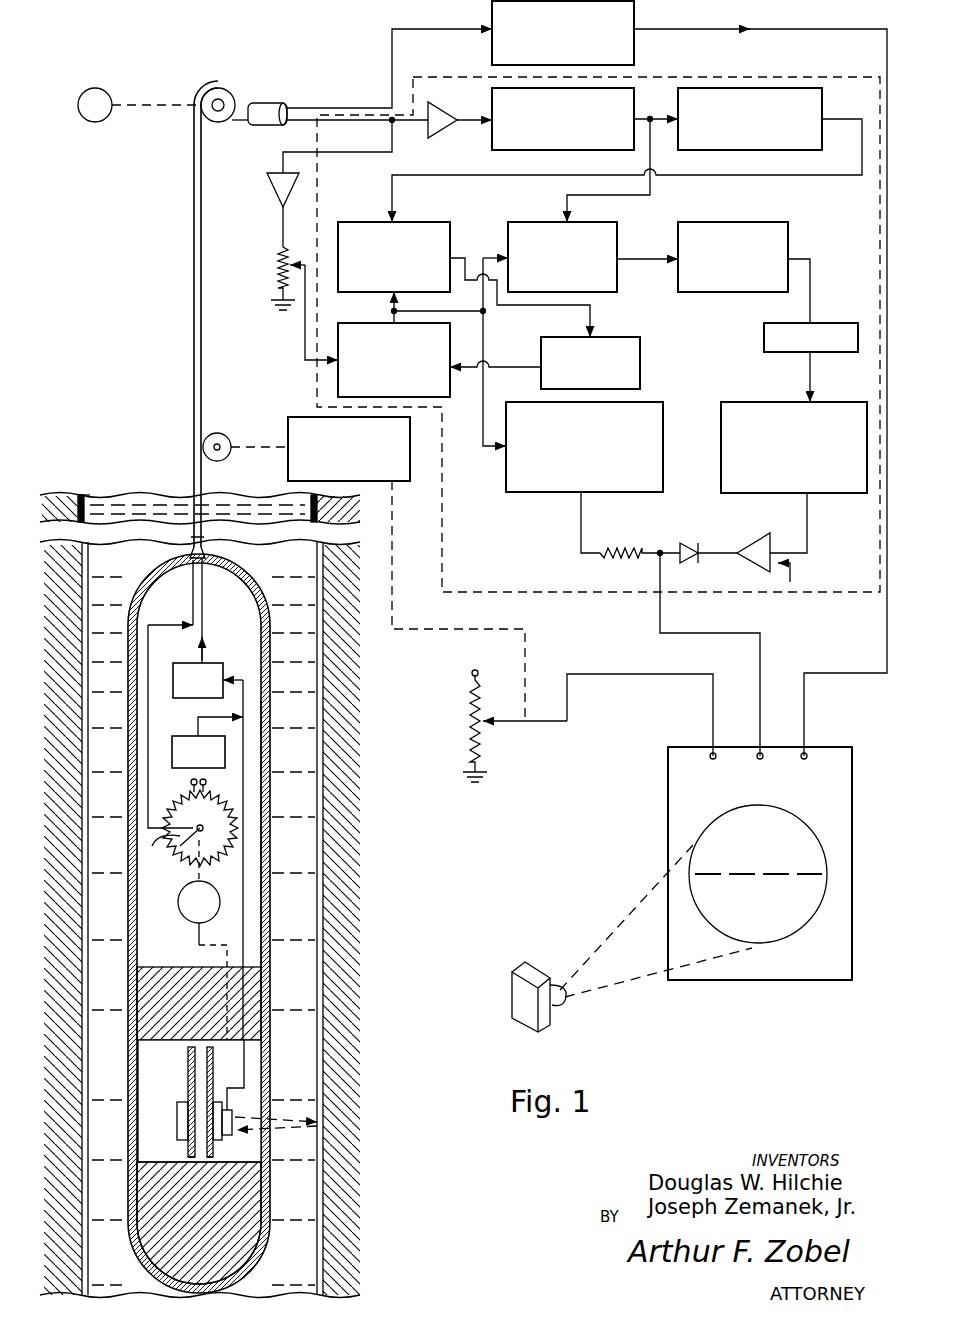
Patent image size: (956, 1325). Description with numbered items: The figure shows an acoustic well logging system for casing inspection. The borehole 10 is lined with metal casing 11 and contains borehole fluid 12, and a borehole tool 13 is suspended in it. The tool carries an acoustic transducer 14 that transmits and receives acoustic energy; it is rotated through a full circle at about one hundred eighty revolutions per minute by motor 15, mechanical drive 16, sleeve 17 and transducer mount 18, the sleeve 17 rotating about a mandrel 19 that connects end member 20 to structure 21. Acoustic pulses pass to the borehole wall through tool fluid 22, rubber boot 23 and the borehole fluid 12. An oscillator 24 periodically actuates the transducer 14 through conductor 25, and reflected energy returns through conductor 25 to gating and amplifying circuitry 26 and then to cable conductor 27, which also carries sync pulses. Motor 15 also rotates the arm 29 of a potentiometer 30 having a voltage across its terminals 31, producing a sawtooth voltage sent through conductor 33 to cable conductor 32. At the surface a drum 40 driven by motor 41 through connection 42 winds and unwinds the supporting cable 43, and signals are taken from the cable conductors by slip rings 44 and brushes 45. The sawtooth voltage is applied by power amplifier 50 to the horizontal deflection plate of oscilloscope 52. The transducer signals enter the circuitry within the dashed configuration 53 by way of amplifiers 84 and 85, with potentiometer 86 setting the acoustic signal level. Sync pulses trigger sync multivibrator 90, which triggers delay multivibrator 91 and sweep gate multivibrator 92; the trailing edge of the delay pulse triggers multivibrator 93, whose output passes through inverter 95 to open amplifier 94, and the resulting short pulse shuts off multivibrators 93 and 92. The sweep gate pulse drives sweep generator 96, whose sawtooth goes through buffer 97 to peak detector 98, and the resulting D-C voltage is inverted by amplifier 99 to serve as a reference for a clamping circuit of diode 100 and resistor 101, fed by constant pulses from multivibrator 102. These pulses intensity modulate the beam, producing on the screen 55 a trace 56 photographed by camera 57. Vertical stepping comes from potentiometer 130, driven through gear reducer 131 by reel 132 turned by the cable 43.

The borehole 10 is at (142, 498).
The metal casing 11 is at (98, 497).
The borehole fluid 12 is at (118, 588).
The borehole tool 13 is at (252, 588).
The acoustic transducer 14 is at (240, 1135).
The motor 15 is at (184, 914).
The mechanical drive 16 is at (190, 946).
The sleeve 17 is at (186, 1058).
The transducer mount 18 is at (178, 1100).
The mandrel 19 is at (188, 1158).
The end member 20 is at (146, 1264).
The structure 21 is at (137, 975).
The tool fluid 22 is at (150, 1114).
The rubber boot 23 is at (263, 1075).
The oscillator 24 is at (174, 735).
The conductor 25 is at (262, 862).
The gating and amplifying circuitry 26 is at (218, 664).
The cable conductor 27 is at (203, 620).
The arm 29 is at (178, 850).
The potentiometer 30 is at (182, 878).
The terminals 31 is at (190, 782).
The cable conductor 32 is at (192, 600).
The conductor 33 is at (148, 650).
The drum 40 is at (228, 90).
The motor 41 is at (90, 90).
The connection 42 is at (152, 102).
The supporting cable 43 is at (194, 278).
The slip rings 44 is at (223, 102).
The brushes 45 is at (214, 125).
The power amplifier 50 is at (492, 44).
The oscilloscope 52 is at (772, 980).
The circuitry 53 is at (314, 395).
The screen 55 is at (803, 897).
The trace 56 is at (780, 874).
The camera 57 is at (512, 995).
The amplifier 84 is at (442, 112).
The amplifier 85 is at (270, 190).
The potentiometer 86 is at (276, 263).
The sync monostable multivibrator 90 is at (634, 112).
The delay multivibrator 91 is at (822, 112).
The sweep gate multivibrator 92 is at (540, 222).
The monostable multivibrator 93 is at (406, 222).
The amplifier 94 is at (450, 393).
The inverter 95 is at (640, 352).
The sweep generator 96 is at (788, 248).
The buffer 97 is at (838, 323).
The peak detector 98 is at (745, 402).
The amplifier 99 is at (750, 540).
The diode 100 is at (692, 543).
The resistor 101 is at (620, 560).
The multivibrator 102 is at (556, 492).
The potentiometer 130 is at (468, 704).
The gear reducer 131 is at (340, 481).
The reel 132 is at (224, 432).